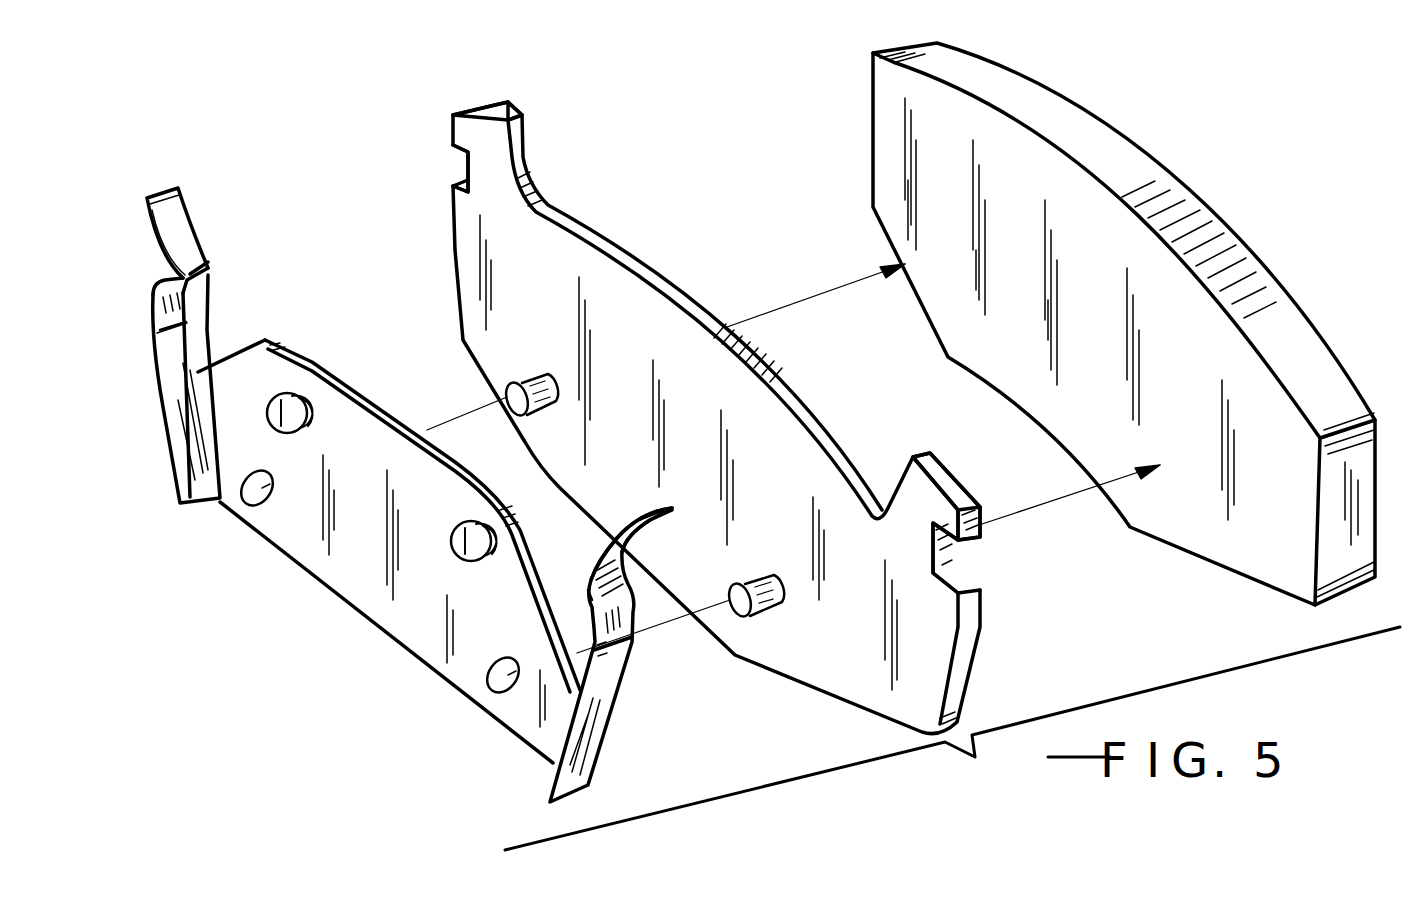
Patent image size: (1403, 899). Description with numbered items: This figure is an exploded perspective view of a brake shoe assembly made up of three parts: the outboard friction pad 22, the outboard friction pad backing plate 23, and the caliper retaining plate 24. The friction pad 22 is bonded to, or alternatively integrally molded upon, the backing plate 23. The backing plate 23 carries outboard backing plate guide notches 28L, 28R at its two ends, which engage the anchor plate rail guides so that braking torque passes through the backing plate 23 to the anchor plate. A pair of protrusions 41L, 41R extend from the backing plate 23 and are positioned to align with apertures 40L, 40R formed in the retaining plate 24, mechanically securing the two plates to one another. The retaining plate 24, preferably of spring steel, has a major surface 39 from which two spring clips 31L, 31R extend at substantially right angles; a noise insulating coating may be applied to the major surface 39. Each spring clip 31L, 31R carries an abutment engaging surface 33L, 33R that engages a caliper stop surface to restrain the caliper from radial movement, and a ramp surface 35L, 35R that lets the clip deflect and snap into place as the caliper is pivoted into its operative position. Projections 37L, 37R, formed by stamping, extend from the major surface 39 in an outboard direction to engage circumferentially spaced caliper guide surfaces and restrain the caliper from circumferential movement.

The outboard friction pad 22 is at (1085, 140).
The outboard friction pad backing plate 23 is at (630, 267).
The caliper retaining plate 24 is at (350, 541).
The outboard backing plate guide notch 28L is at (467, 167).
The outboard backing plate guide notch 28R is at (950, 563).
The spring clip 31L is at (205, 333).
The spring clip 31R is at (600, 651).
The abutment engaging surface 33L is at (183, 298).
The abutment engaging surface 33R is at (577, 600).
The ramp surface 35L is at (187, 232).
The ramp surface 35R is at (620, 537).
The projection 37L is at (290, 414).
The projection 37R is at (453, 553).
The major surface 39 is at (369, 576).
The aperture 40L is at (248, 492).
The aperture 40R is at (492, 692).
The protrusion 41L is at (507, 390).
The protrusion 41R is at (755, 618).